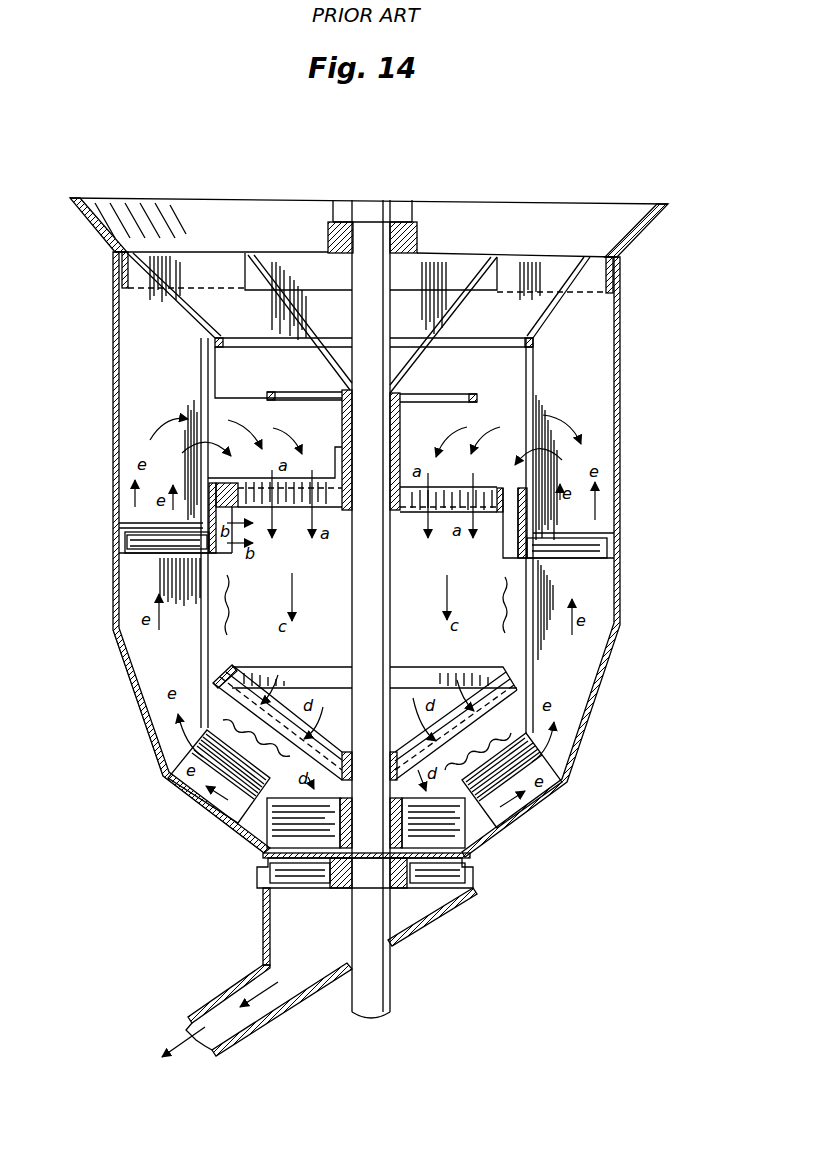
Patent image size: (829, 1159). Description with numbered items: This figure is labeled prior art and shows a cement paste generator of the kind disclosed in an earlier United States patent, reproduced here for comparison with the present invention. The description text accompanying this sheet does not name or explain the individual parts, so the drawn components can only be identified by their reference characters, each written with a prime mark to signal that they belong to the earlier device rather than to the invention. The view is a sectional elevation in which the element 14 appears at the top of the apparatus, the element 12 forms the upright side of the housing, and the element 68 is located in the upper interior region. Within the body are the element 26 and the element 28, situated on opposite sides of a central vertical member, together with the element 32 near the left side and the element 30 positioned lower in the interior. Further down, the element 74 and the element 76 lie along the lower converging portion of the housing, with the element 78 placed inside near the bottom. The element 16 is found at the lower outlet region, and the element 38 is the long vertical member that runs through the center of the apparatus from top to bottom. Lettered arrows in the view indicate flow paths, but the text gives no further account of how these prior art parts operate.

The top cover 14 is at (497, 212).
The housing wall 12 is at (111, 380).
The support braces 68 is at (258, 300).
The annular plate 26 is at (455, 482).
The lower annular plate 28 is at (203, 518).
The slot 32 is at (146, 554).
The inclined trough 30 is at (399, 710).
The lower housing wall 74 is at (147, 662).
The housing cone 76 is at (157, 742).
The deflector plate 78 is at (202, 810).
The outlet flange 16 is at (400, 908).
The shaft 38 is at (370, 982).